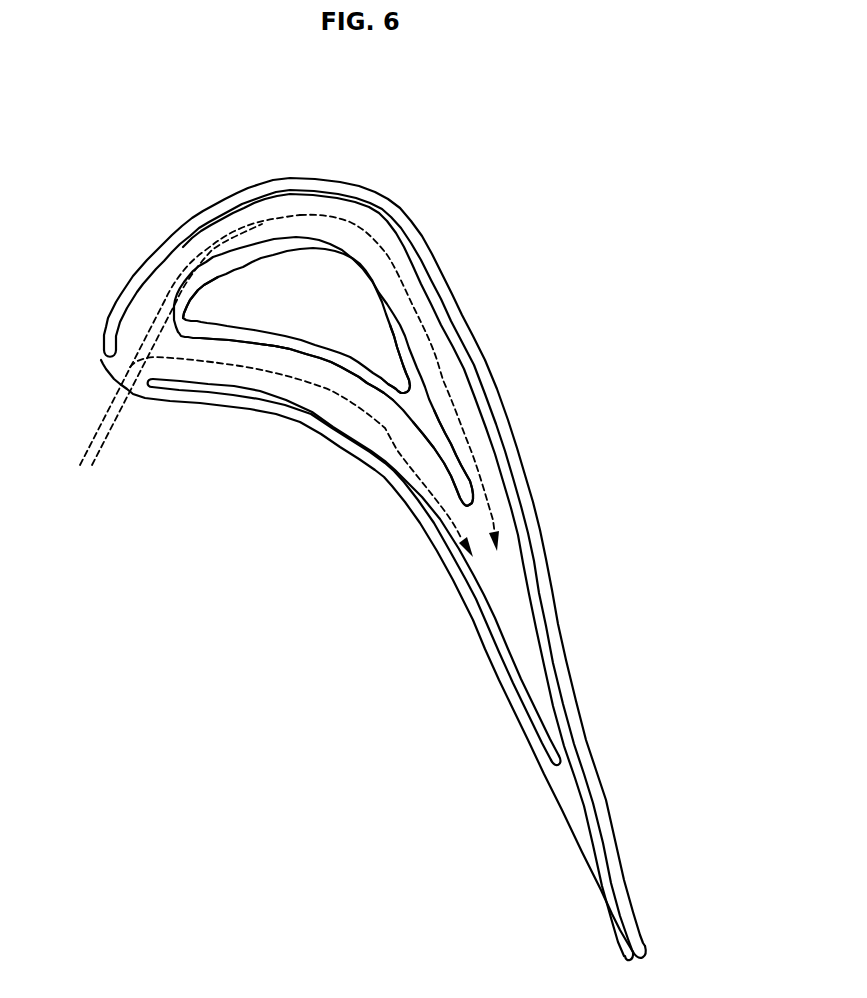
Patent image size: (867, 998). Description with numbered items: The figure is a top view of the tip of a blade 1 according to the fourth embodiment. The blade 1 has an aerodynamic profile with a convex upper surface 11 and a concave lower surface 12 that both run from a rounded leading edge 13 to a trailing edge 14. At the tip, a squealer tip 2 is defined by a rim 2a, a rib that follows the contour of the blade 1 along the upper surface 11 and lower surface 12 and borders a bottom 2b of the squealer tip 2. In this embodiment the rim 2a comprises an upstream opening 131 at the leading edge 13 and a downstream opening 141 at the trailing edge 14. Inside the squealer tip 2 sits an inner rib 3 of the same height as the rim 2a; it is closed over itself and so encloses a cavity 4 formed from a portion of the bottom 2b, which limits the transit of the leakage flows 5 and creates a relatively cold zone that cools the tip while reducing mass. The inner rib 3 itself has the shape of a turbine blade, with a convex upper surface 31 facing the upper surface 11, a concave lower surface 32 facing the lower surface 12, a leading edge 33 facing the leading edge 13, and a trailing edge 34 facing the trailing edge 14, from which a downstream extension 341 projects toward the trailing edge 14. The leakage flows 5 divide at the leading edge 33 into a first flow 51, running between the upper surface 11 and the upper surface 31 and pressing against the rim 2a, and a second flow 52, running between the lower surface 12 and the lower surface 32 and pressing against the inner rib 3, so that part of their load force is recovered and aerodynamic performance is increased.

The blade 1 is at (370, 569).
The upper surface 11 is at (435, 292).
The lower surface 12 is at (394, 483).
The leading edge 13 is at (110, 363).
The upstream opening 131 is at (142, 374).
The trailing edge 14 is at (623, 925).
The downstream opening 141 is at (577, 812).
The squealer tip 2 is at (500, 573).
The rim 2a is at (520, 707).
The bottom 2b is at (513, 603).
The inner rib 3 is at (234, 265).
The upper surface of the inner rib 31 is at (332, 250).
The lower surface of the inner rib 32 is at (343, 368).
The leading edge of the inner rib 33 is at (184, 321).
The trailing edge of the inner rib 34 is at (413, 391).
The downstream extension 341 is at (450, 463).
The cavity 4 is at (283, 310).
The leakage flows 5 is at (100, 417).
The first flow 51 is at (257, 223).
The second flow 52 is at (203, 362).